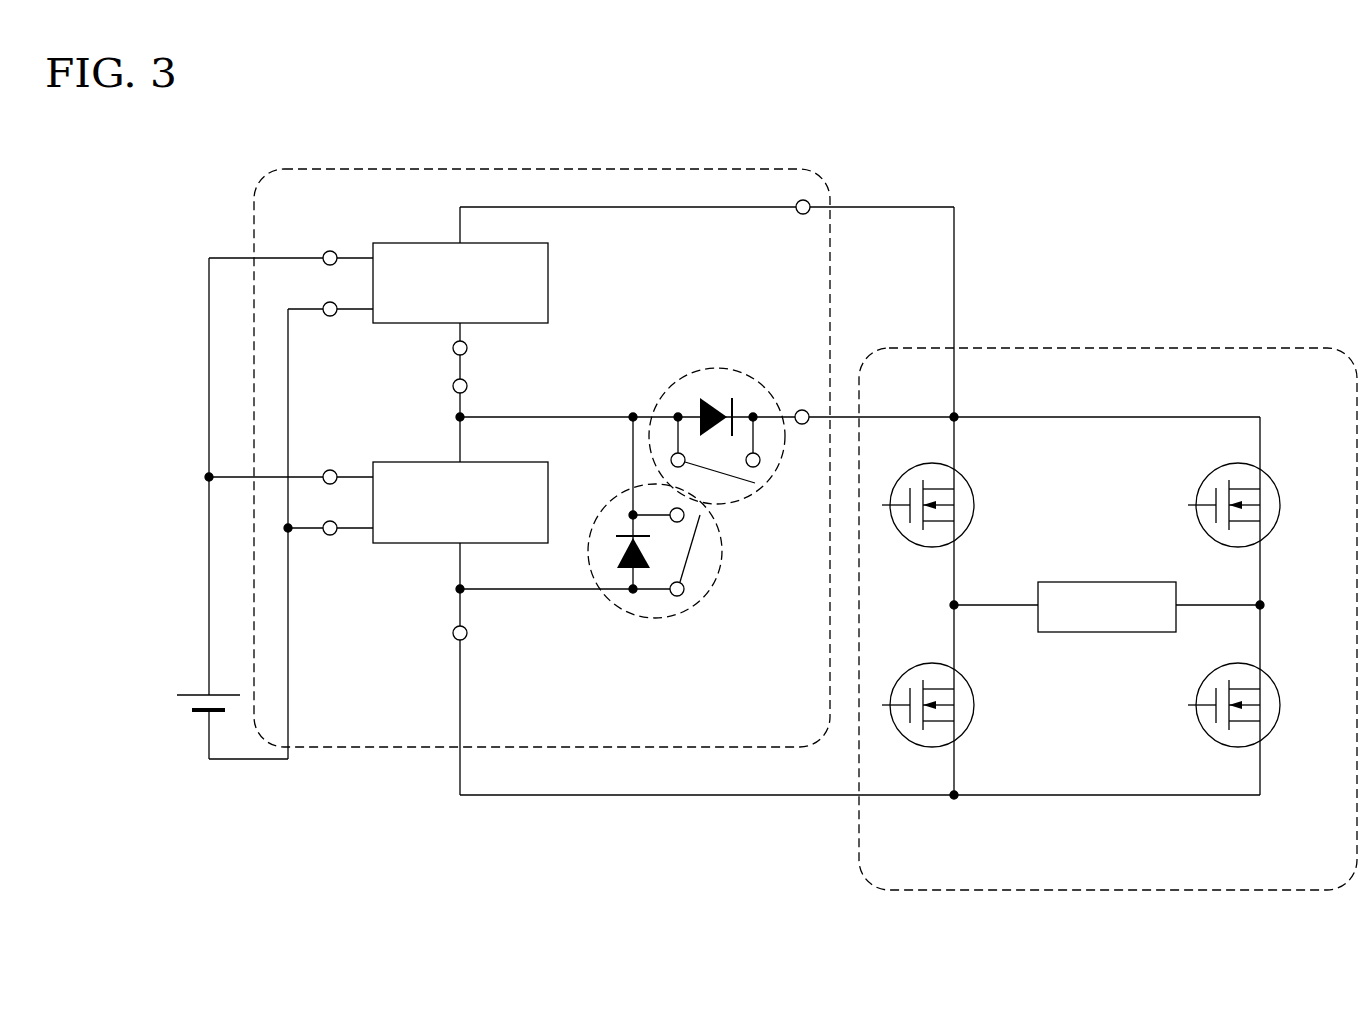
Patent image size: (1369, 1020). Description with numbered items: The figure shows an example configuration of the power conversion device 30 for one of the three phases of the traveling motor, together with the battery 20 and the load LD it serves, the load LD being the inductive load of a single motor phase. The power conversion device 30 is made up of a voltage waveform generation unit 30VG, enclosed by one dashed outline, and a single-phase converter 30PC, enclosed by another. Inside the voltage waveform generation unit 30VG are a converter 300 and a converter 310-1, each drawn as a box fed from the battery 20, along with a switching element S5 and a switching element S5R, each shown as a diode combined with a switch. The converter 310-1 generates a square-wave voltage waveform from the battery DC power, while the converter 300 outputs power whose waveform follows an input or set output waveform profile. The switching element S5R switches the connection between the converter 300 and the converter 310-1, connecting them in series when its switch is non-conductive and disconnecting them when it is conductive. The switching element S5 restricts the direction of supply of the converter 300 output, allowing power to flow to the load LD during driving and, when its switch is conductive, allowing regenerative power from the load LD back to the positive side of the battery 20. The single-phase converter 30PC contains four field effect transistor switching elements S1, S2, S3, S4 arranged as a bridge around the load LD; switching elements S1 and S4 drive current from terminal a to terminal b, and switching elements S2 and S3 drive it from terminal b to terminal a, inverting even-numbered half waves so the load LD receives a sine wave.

The power conversion device 30 is at (162, 204).
The battery 20 is at (199, 694).
The voltage waveform generation unit 30VG is at (735, 169).
The single-phase converter 30PC is at (1218, 348).
The converter 310-1 is at (408, 242).
The converter 300 is at (411, 461).
The switching element S5 is at (728, 369).
The switching element S5R is at (633, 618).
The switching element S1 is at (954, 505).
The switching element S2 is at (954, 705).
The switching element S3 is at (1260, 505).
The switching element S4 is at (1260, 705).
The load LD is at (1129, 583).